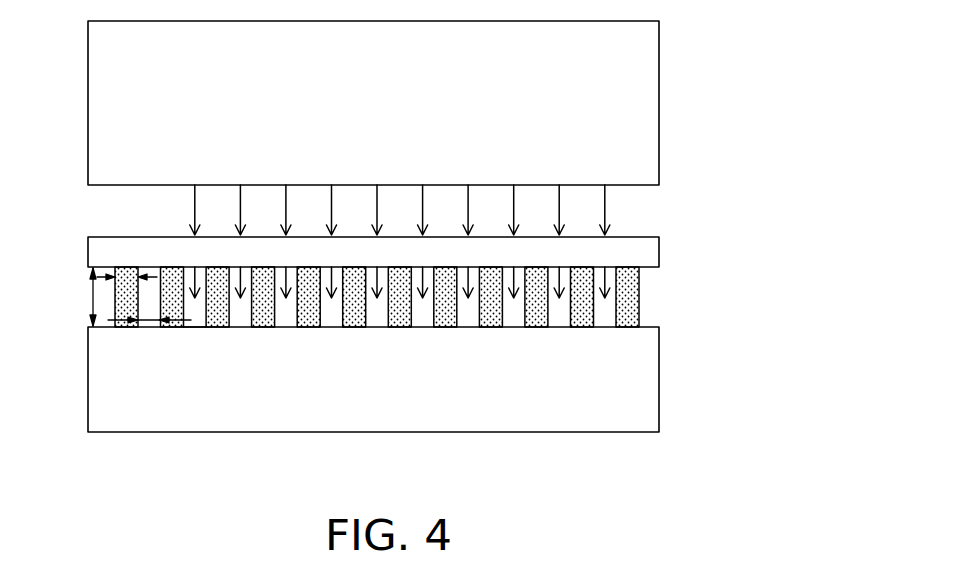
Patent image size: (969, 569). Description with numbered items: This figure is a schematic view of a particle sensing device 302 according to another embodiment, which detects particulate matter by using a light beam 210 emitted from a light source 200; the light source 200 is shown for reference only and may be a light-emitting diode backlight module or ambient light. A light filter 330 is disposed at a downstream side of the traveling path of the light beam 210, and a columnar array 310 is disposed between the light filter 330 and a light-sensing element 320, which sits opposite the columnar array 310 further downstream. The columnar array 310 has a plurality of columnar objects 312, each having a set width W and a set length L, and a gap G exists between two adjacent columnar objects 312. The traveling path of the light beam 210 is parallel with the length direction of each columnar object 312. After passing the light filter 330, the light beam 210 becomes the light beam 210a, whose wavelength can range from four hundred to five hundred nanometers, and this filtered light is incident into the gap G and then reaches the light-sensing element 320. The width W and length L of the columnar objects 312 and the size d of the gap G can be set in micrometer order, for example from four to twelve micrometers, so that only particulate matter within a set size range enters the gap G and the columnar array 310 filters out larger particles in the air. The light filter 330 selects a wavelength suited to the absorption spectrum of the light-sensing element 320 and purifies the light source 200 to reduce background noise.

The light source 200 is at (645, 139).
The light beam 210 is at (193, 210).
The filtered light beam 210a is at (191, 268).
The particle sensing device 302 is at (372, 326).
The columnar array 310 is at (372, 326).
The columnar object 312 is at (133, 267).
The light-sensing element 320 is at (643, 388).
The light filter 330 is at (100, 245).
The width W is at (125, 267).
The length L is at (92, 297).
The size of the gap d is at (148, 322).
The gap G is at (206, 322).